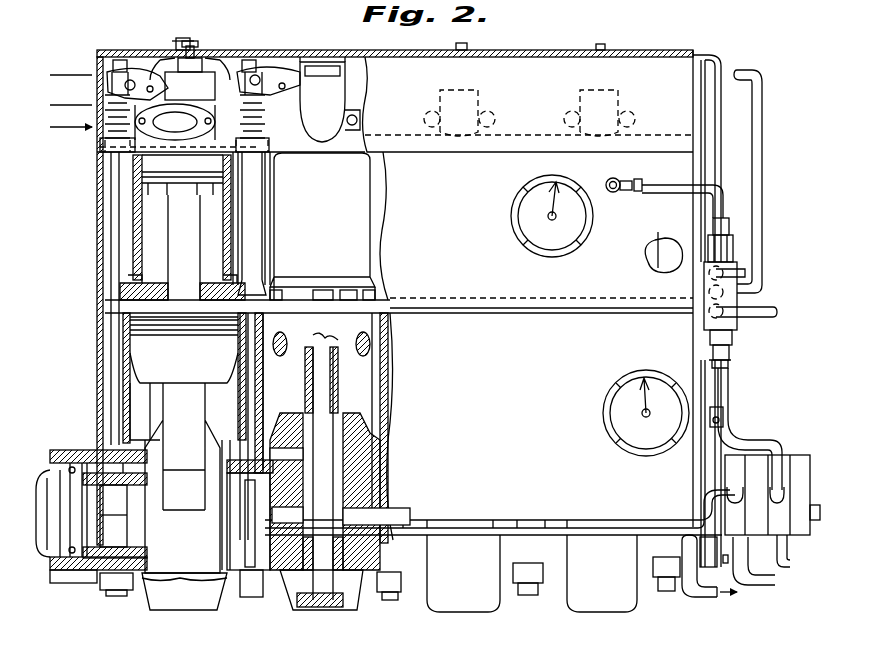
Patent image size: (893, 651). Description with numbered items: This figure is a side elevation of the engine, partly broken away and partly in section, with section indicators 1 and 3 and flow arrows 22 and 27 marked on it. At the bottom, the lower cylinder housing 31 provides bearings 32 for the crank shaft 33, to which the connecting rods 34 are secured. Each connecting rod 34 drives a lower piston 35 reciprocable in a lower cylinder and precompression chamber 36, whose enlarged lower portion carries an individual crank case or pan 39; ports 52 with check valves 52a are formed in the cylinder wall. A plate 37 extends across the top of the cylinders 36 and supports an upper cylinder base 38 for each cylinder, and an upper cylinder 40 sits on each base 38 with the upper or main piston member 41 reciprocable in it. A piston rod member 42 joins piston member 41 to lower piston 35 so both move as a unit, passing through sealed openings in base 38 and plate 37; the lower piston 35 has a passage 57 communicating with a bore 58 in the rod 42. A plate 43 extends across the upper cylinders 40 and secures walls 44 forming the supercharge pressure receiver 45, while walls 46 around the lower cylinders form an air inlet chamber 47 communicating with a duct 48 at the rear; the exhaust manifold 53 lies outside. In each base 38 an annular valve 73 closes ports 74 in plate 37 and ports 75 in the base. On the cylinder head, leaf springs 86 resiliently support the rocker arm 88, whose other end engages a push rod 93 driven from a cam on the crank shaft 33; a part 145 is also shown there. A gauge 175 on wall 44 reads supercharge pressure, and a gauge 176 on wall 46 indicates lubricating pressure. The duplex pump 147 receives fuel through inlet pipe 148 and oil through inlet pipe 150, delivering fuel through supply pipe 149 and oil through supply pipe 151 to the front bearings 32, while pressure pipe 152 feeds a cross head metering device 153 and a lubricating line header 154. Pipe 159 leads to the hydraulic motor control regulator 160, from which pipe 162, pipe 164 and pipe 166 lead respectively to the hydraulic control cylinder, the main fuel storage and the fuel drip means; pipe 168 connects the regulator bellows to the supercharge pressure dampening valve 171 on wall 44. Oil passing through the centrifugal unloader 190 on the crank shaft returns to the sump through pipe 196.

The section line 1- 1 is at (97, 57).
The section line 3-3 / fitting 3 is at (593, 190).
The flow direction arrows 22 is at (117, 413).
The flow arrow 27 is at (722, 207).
The lower cylinder housing 31 is at (103, 378).
The bearings 32 is at (73, 443).
The crank shaft 33 is at (121, 516).
The connecting rods 34 is at (186, 496).
The lower piston 35 is at (184, 378).
The lower cylinder and precompression chamber 36 is at (145, 411).
The plate 37 is at (387, 302).
The upper cylinder base 38 is at (298, 280).
The crank case or pan 39 is at (352, 612).
The upper cylinder 40 is at (254, 226).
The upper or main piston member 41 is at (208, 170).
The piston rod member 42 is at (184, 247).
The plate 43 is at (330, 148).
The walls 44 is at (468, 189).
The super-charge pressure receiver 45 is at (378, 228).
The walls 46 is at (527, 374).
The air inlet chamber 47 is at (390, 377).
The duct 48 is at (672, 258).
The ports 52 is at (368, 347).
The check valves 52a is at (367, 353).
The exhaust manifold 53 is at (668, 63).
The passage 57 is at (300, 413).
The bore 58 is at (323, 377).
The annular valve 73 is at (150, 281).
The ports 74 is at (133, 307).
The ports 75 is at (218, 273).
The leaf springs 86 is at (305, 48).
The rocker arm 88 is at (137, 75).
The push rod 93 is at (110, 97).
The injector body 145 is at (220, 63).
The duplex pump 147 is at (802, 455).
The fuel inlet pipe 148 is at (812, 555).
The fuel pressure supply pipe 149 is at (737, 375).
The lubricating oil inlet pipe 150 is at (780, 585).
The lubricating pressure supply pipe 151 is at (593, 533).
The lubricating oil pressure pipe 152 is at (713, 477).
The cross head metering device 153 is at (723, 420).
The lubricating line header 154 is at (707, 357).
The pipe 159 is at (722, 63).
The hydraulic motor control regulator 160 is at (700, 302).
The pipe 162 is at (764, 218).
The pipe 164 is at (748, 317).
The pipe 166 is at (745, 273).
The pipe 168 is at (693, 193).
The supercharge pressure dampening valve 171 is at (617, 192).
The gauge 175 is at (516, 246).
The gauge 176 is at (606, 429).
The hydraulic speed determinator or centrifugal unloader 190 is at (710, 570).
The pipe 196 is at (707, 597).